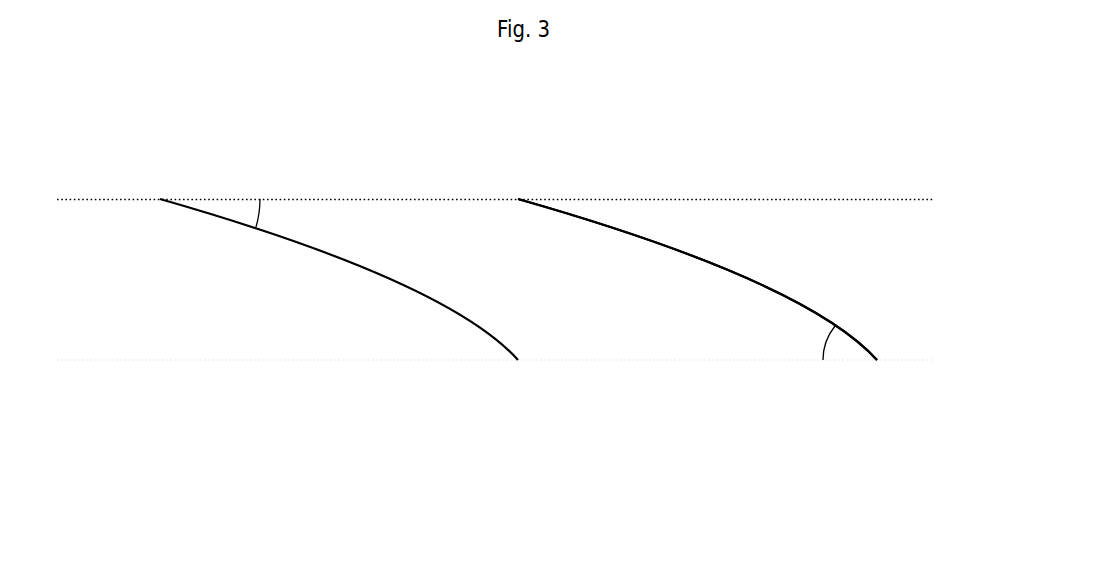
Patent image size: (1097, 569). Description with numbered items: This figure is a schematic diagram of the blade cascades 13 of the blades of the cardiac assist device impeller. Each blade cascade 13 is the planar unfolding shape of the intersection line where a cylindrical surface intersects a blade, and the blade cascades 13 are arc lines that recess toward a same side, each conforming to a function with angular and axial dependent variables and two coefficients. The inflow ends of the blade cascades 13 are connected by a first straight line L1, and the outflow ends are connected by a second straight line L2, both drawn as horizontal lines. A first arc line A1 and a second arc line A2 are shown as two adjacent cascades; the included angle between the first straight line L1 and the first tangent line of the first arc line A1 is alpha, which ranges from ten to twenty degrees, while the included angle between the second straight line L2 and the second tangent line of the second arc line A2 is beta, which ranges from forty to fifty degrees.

The blade cascade 13 is at (595, 218).
The first arc line A1 is at (444, 304).
The second arc line A2 is at (755, 282).
The first straight line L1 is at (515, 201).
The second straight line L2 is at (509, 356).